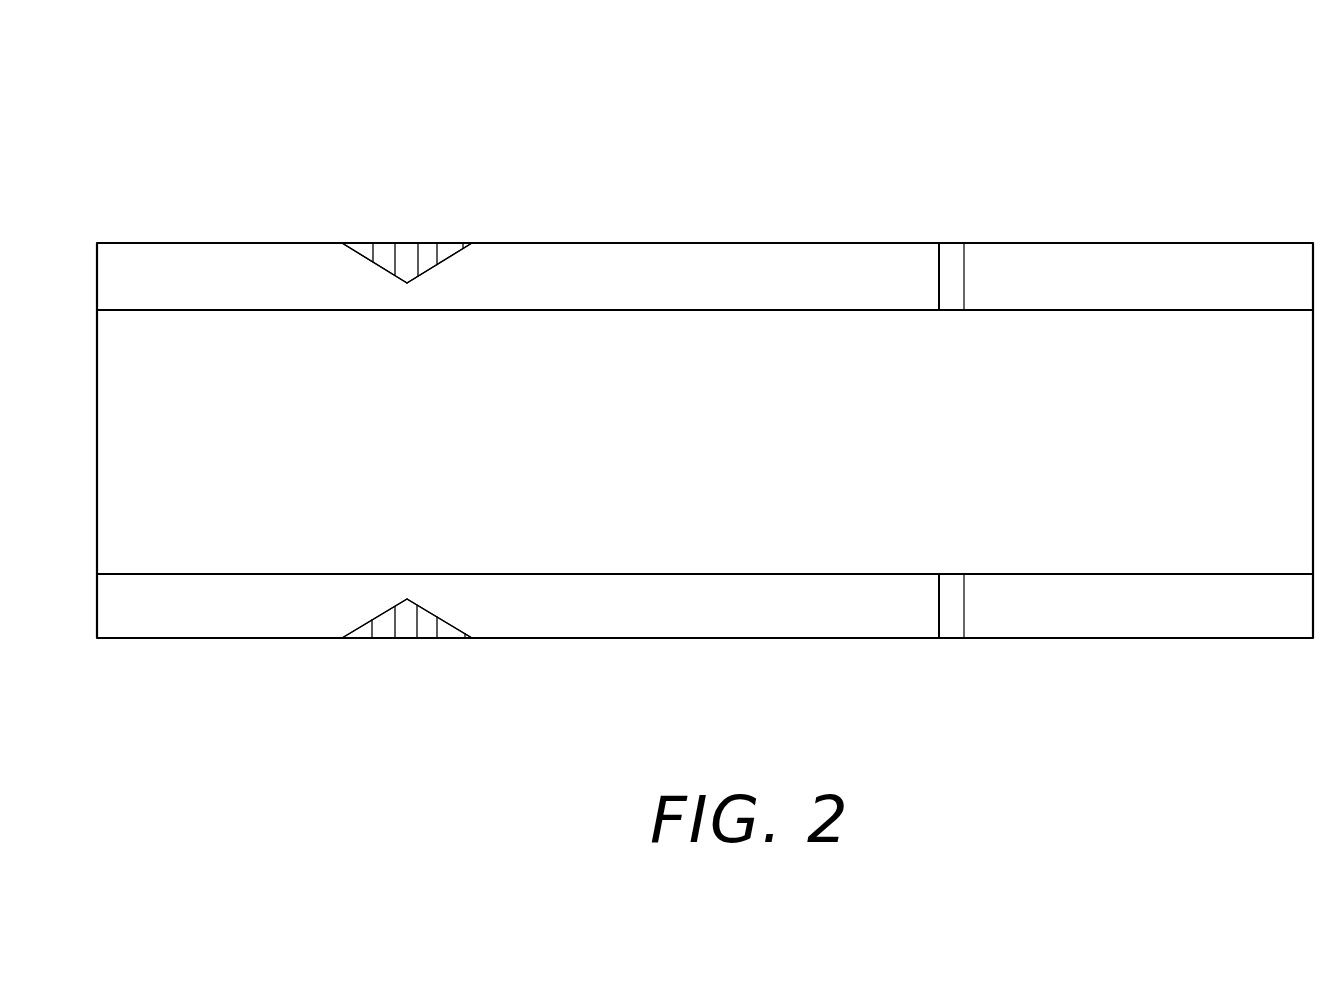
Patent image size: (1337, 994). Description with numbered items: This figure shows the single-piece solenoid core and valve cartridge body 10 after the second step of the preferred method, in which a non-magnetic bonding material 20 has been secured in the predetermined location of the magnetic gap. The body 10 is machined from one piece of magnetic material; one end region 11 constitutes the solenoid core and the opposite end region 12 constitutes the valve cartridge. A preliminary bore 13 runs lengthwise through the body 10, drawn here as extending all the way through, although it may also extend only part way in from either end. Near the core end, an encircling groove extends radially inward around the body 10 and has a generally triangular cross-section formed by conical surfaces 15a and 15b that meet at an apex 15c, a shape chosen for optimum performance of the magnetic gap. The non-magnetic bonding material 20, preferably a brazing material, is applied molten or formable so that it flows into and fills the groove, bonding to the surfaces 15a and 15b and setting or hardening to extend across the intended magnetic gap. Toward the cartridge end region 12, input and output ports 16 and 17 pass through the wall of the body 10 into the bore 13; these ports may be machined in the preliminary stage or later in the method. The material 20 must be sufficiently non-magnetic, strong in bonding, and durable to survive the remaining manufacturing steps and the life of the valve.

The solenoid core and valve cartridge body 10 is at (775, 228).
The core end region 11 is at (145, 194).
The valve cartridge end region 12 is at (1210, 234).
The preliminary bore 13 is at (232, 573).
The conical surface 15a is at (358, 244).
The conical surface 15b is at (430, 244).
The apex 15c is at (420, 638).
The input port 16 is at (953, 265).
The output port 17 is at (952, 618).
The non-magnetic bonding material 20 is at (395, 243).